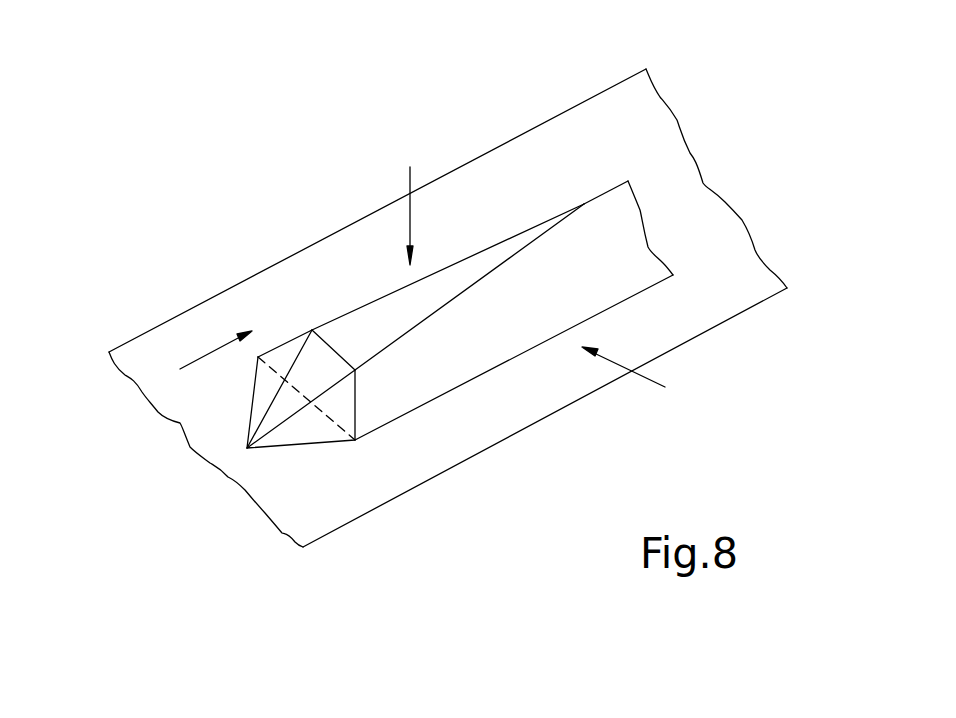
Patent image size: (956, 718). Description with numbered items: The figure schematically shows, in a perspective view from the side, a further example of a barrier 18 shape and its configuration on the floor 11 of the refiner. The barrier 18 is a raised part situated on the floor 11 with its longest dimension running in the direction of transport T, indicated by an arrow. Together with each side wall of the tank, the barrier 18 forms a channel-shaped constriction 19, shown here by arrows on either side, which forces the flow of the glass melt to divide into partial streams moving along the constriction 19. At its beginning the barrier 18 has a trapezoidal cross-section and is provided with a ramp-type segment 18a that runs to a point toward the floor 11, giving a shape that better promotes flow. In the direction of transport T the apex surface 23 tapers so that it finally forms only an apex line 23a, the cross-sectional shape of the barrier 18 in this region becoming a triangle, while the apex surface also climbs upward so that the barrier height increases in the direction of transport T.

The floor 11 is at (528, 397).
The barrier 18 is at (460, 303).
The ramp-type segment 18a is at (298, 437).
The channel-shaped constriction 19 is at (545, 268).
The apex surface 23 is at (362, 350).
The apex line 23a is at (600, 192).
The direction of transport T is at (188, 329).